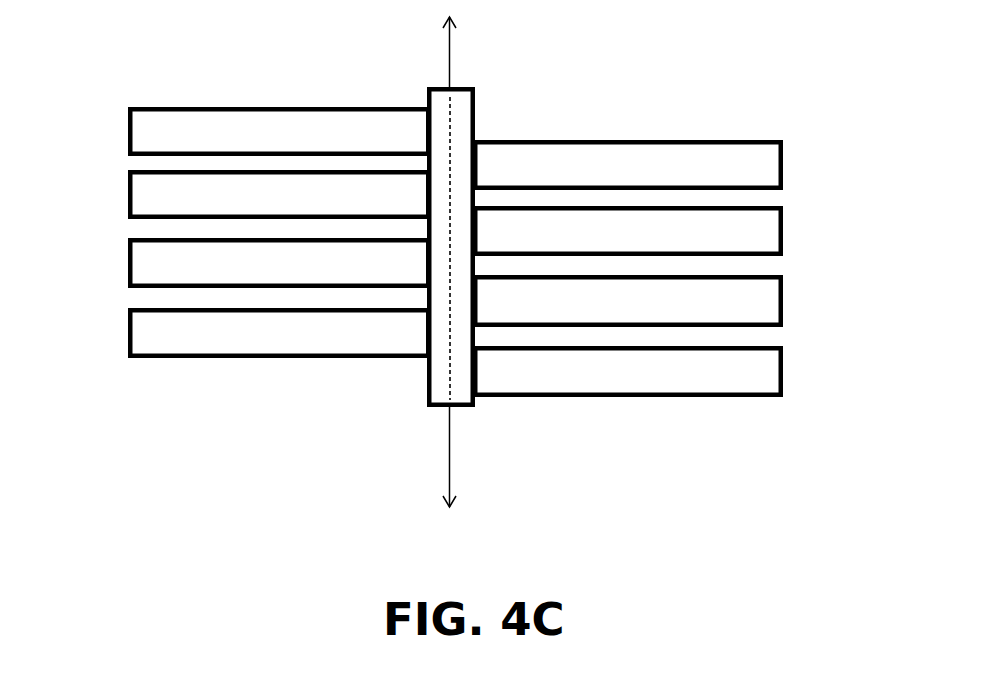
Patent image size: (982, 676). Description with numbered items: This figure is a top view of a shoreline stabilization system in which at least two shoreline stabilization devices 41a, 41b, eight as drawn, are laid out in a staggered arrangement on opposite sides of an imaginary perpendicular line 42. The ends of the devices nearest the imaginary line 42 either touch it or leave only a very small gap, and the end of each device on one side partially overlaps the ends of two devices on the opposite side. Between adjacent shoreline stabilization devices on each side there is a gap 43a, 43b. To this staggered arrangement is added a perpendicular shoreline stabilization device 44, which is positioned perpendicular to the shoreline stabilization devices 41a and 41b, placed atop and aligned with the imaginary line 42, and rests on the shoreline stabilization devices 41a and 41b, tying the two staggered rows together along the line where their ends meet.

The shoreline stabilization devices 41a is at (270, 336).
The shoreline stabilization devices 41b is at (638, 372).
The imaginary perpendicular line 42 is at (451, 279).
The gap 43a is at (150, 297).
The gap 43b is at (762, 333).
The perpendicular shoreline stabilization device 44 is at (462, 127).